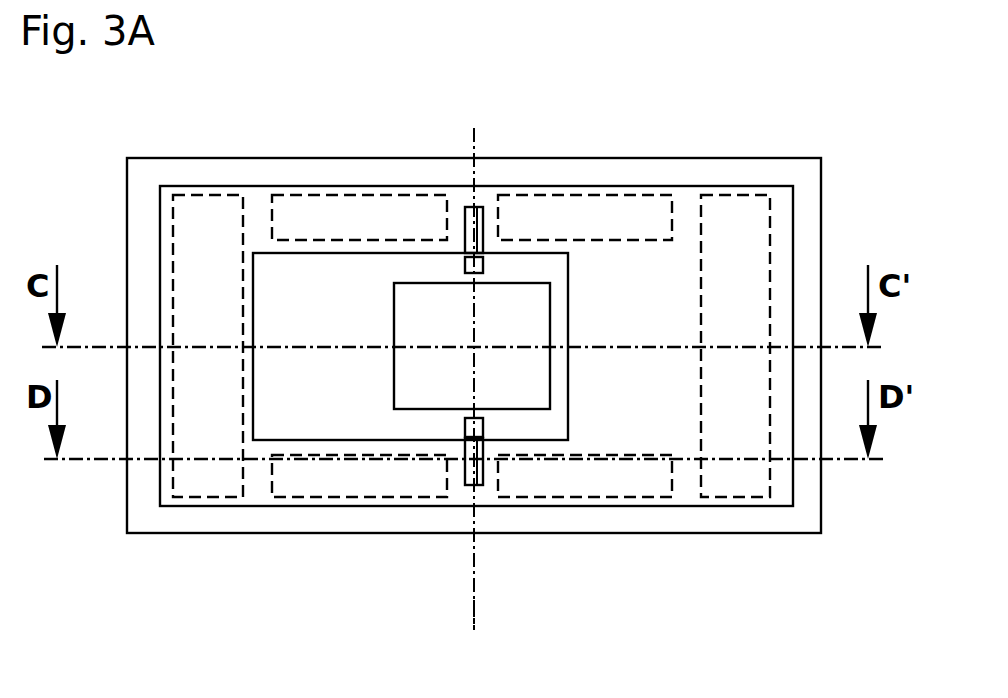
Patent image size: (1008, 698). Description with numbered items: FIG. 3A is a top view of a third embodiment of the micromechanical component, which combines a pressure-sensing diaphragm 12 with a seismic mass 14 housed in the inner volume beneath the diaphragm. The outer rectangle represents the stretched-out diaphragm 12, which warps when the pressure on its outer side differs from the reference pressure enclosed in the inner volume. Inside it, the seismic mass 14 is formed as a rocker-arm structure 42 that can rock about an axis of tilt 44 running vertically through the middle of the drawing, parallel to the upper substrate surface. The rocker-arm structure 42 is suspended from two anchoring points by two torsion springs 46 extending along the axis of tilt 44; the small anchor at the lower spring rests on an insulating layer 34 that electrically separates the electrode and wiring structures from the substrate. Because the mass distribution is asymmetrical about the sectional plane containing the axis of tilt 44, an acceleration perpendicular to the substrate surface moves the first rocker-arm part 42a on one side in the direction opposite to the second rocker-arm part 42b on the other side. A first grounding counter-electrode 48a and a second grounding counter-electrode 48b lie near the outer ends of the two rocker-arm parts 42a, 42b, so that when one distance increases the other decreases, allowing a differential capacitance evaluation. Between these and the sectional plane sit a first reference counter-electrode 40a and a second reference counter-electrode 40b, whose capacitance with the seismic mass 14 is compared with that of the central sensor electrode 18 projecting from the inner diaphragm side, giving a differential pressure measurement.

The diaphragm 12 is at (807, 513).
The seismic mass 14 is at (667, 285).
The rocker-arm structure 42 is at (410, 346).
The first rocker-arm part 42a is at (260, 500).
The second rocker-arm part 42b is at (687, 499).
The sensor electrode 18 is at (513, 305).
The first reference counter-electrode 40a is at (335, 205).
The second reference counter-electrode 40b is at (617, 205).
The first grounding counter-electrode 48a is at (185, 225).
The second grounding counter-electrode 48b is at (760, 218).
The torsion spring 46 is at (481, 213).
The insulating layer 34 is at (483, 427).
The axis of tilt 44 is at (474, 620).